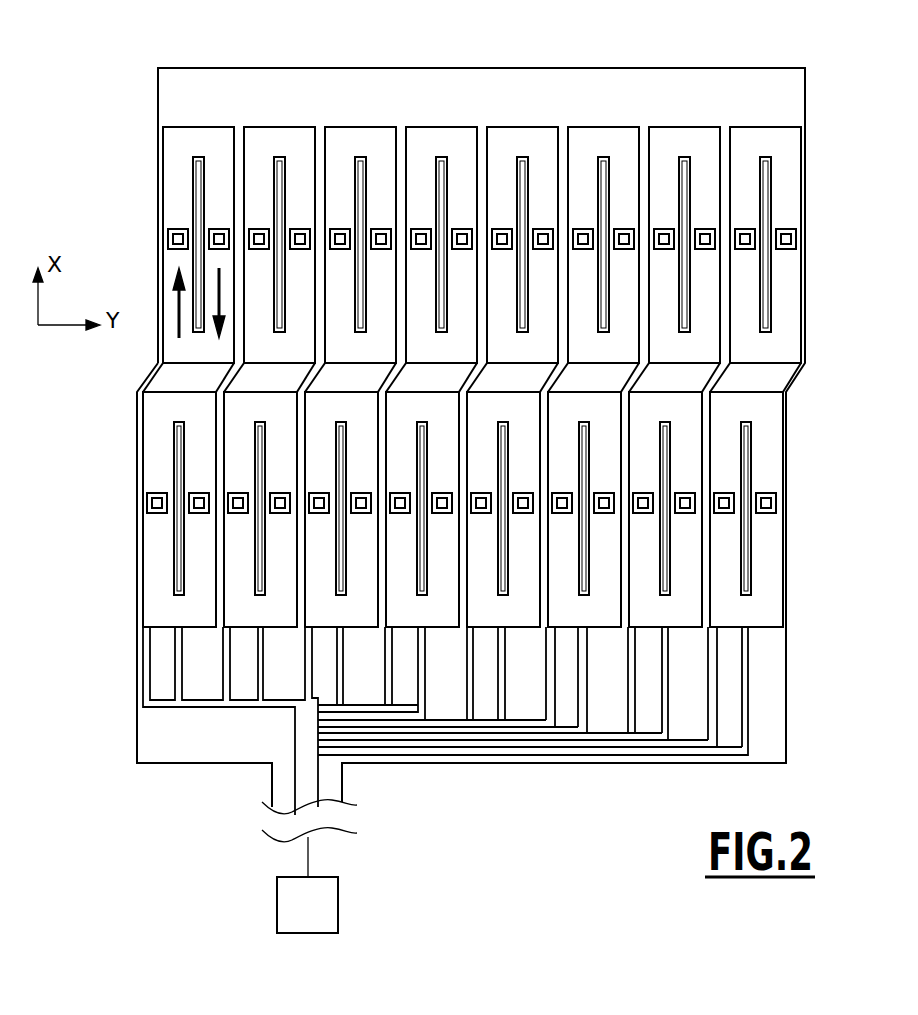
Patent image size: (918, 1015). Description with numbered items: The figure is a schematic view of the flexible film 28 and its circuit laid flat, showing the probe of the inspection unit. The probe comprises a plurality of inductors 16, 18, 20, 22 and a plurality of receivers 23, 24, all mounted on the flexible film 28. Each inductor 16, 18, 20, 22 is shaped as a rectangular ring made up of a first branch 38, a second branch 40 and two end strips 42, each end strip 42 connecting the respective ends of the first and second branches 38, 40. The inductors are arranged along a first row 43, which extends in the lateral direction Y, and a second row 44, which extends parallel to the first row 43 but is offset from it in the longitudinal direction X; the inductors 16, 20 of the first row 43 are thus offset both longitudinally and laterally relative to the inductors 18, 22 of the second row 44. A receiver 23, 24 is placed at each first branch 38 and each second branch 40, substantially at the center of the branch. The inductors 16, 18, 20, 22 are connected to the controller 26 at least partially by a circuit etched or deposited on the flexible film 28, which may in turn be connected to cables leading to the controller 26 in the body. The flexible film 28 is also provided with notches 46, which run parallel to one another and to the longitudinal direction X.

The inductor 16 is at (753, 138).
The inductor 18 is at (763, 450).
The inductor 20 is at (669, 138).
The inductor 22 is at (680, 580).
The receiver 23 is at (743, 233).
The receiver 24 is at (662, 232).
The controller 26 is at (292, 922).
The flexible film 28 is at (763, 683).
The first branch 38 is at (178, 190).
The second branch 40 is at (220, 193).
The end strip 42 is at (184, 142).
The first row 43 is at (812, 241).
The second row 44 is at (786, 508).
The notch 46 is at (436, 170).